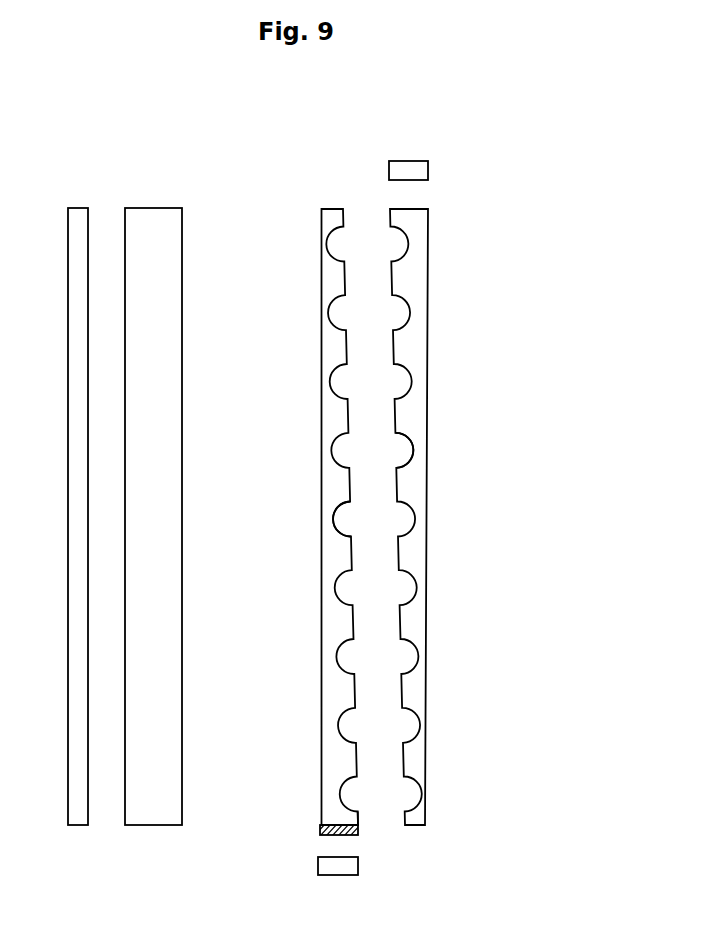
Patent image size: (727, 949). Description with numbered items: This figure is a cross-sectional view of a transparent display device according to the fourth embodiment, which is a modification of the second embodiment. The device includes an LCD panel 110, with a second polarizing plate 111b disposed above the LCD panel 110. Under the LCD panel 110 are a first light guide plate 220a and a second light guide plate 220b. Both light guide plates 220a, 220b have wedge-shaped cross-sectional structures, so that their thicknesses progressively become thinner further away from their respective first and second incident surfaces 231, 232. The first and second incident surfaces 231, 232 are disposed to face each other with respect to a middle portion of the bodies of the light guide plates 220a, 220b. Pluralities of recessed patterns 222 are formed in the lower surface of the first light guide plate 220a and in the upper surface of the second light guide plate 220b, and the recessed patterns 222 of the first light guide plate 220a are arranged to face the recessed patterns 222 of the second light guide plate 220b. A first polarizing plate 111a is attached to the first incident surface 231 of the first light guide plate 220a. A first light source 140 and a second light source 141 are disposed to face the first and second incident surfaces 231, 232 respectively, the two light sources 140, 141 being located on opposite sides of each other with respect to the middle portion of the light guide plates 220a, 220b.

The LCD panel 110 is at (155, 208).
The first polarizing plate 111a is at (320, 830).
The second polarizing plate 111b is at (80, 208).
The first light source 140 is at (318, 866).
The second light source 141 is at (428, 172).
The first light guide plate 220a is at (333, 209).
The second light guide plate 220b is at (428, 273).
The recessed patterns 222 is at (413, 448).
The first incident surface 231 is at (347, 819).
The second incident surface 232 is at (410, 209).